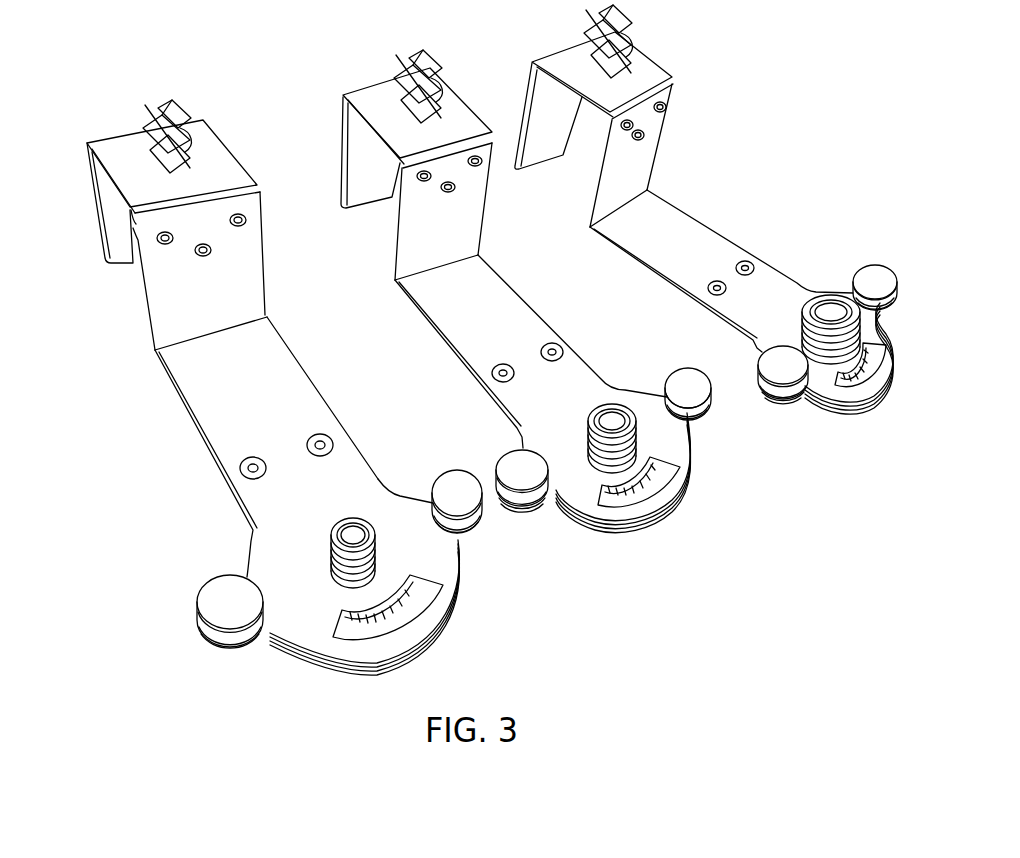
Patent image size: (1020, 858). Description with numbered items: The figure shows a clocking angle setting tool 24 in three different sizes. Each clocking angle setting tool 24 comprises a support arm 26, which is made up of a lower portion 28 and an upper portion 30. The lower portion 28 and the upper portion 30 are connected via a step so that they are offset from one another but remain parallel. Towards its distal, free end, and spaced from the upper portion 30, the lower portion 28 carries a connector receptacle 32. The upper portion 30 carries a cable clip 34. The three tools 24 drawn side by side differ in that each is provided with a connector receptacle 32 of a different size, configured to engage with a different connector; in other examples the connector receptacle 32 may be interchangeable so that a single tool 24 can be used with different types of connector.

The clocking angle setting tool 24 is at (102, 97).
The support arm 26 is at (188, 433).
The lower portion 28 is at (298, 392).
The upper portion 30 is at (233, 165).
The connector receptacle 32 is at (353, 515).
The cable clip 34 is at (177, 107).